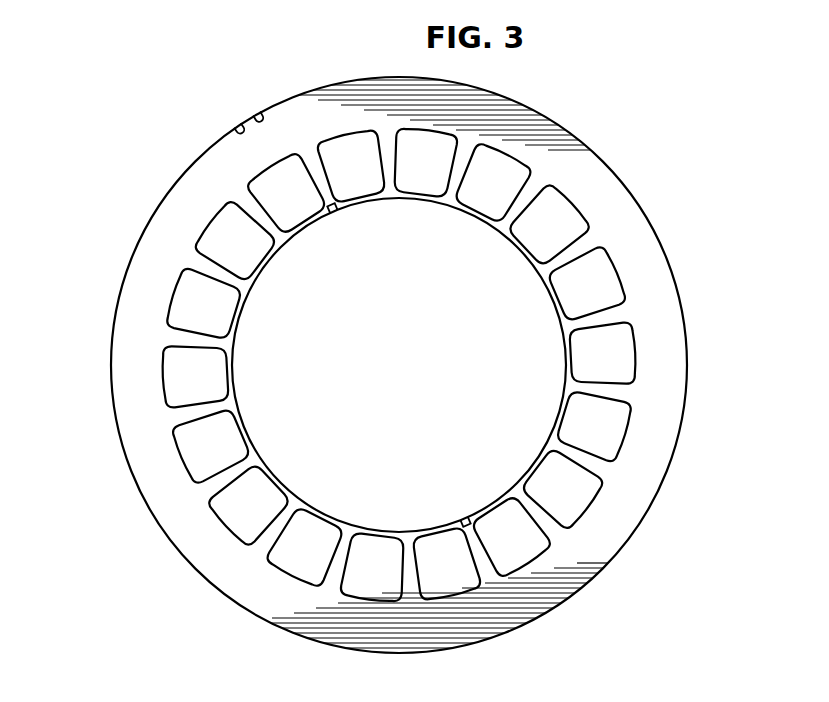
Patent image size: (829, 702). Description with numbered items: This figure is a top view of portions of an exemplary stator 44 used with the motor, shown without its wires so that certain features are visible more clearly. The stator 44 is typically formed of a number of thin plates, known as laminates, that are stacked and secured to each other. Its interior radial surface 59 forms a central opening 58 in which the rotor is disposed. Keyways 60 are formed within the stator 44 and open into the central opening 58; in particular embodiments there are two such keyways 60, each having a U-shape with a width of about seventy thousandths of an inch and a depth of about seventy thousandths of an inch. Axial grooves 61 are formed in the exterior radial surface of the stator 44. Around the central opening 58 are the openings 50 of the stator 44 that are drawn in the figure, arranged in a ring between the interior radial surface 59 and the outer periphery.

The stator 44 is at (640, 213).
The slots 50 is at (176, 294).
The central opening 58 is at (386, 374).
The interior radial surface 59 is at (507, 238).
The keyways 60 is at (334, 207).
The axial grooves 61 is at (236, 124).